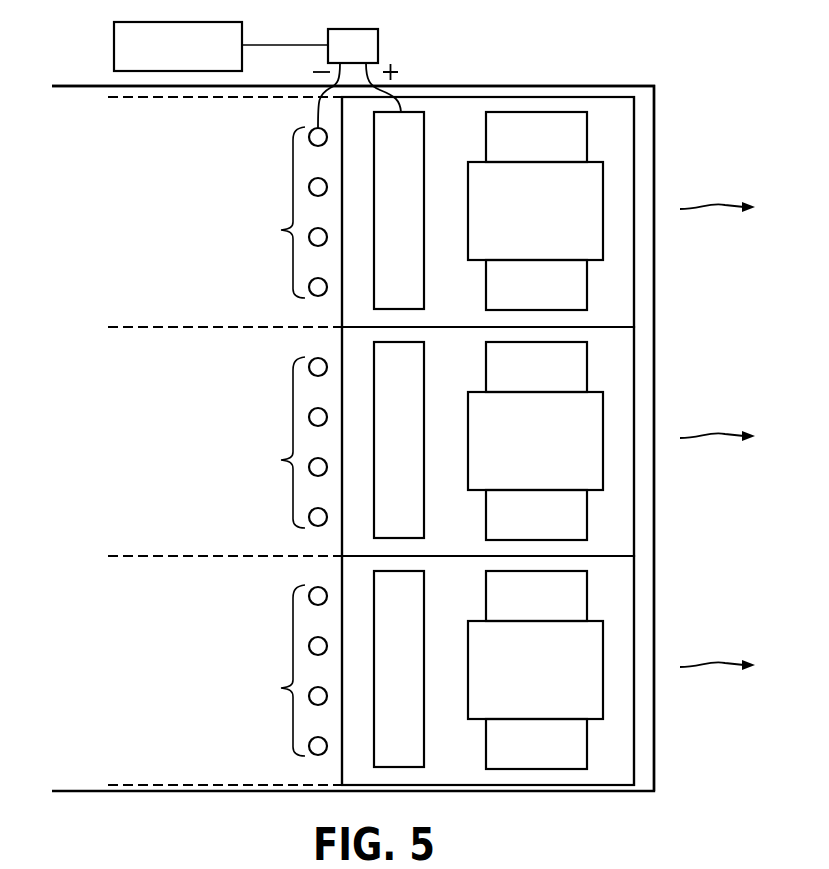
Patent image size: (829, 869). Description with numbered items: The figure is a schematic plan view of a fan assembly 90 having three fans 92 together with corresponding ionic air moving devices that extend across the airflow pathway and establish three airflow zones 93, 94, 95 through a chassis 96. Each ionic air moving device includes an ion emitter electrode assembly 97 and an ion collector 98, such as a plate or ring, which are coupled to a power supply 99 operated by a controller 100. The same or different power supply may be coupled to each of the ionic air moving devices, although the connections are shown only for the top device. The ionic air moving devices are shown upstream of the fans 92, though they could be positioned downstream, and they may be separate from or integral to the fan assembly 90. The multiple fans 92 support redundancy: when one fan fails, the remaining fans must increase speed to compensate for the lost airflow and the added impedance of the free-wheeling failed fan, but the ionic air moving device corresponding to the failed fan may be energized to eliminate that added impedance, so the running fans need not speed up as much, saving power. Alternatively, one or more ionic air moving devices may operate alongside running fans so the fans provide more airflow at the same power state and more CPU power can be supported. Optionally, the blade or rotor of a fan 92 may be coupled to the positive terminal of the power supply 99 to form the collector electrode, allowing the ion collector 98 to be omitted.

The fan assembly 90 is at (688, 86).
The fan 92 is at (587, 132).
The first airflow zone 93 is at (266, 207).
The second airflow zone 94 is at (266, 437).
The third airflow zone 95 is at (266, 665).
The chassis 96 is at (538, 86).
The ion emitter electrode assembly 97 is at (285, 441).
The ion collector 98 is at (415, 216).
The power supply 99 is at (378, 38).
The controller 100 is at (113, 40).